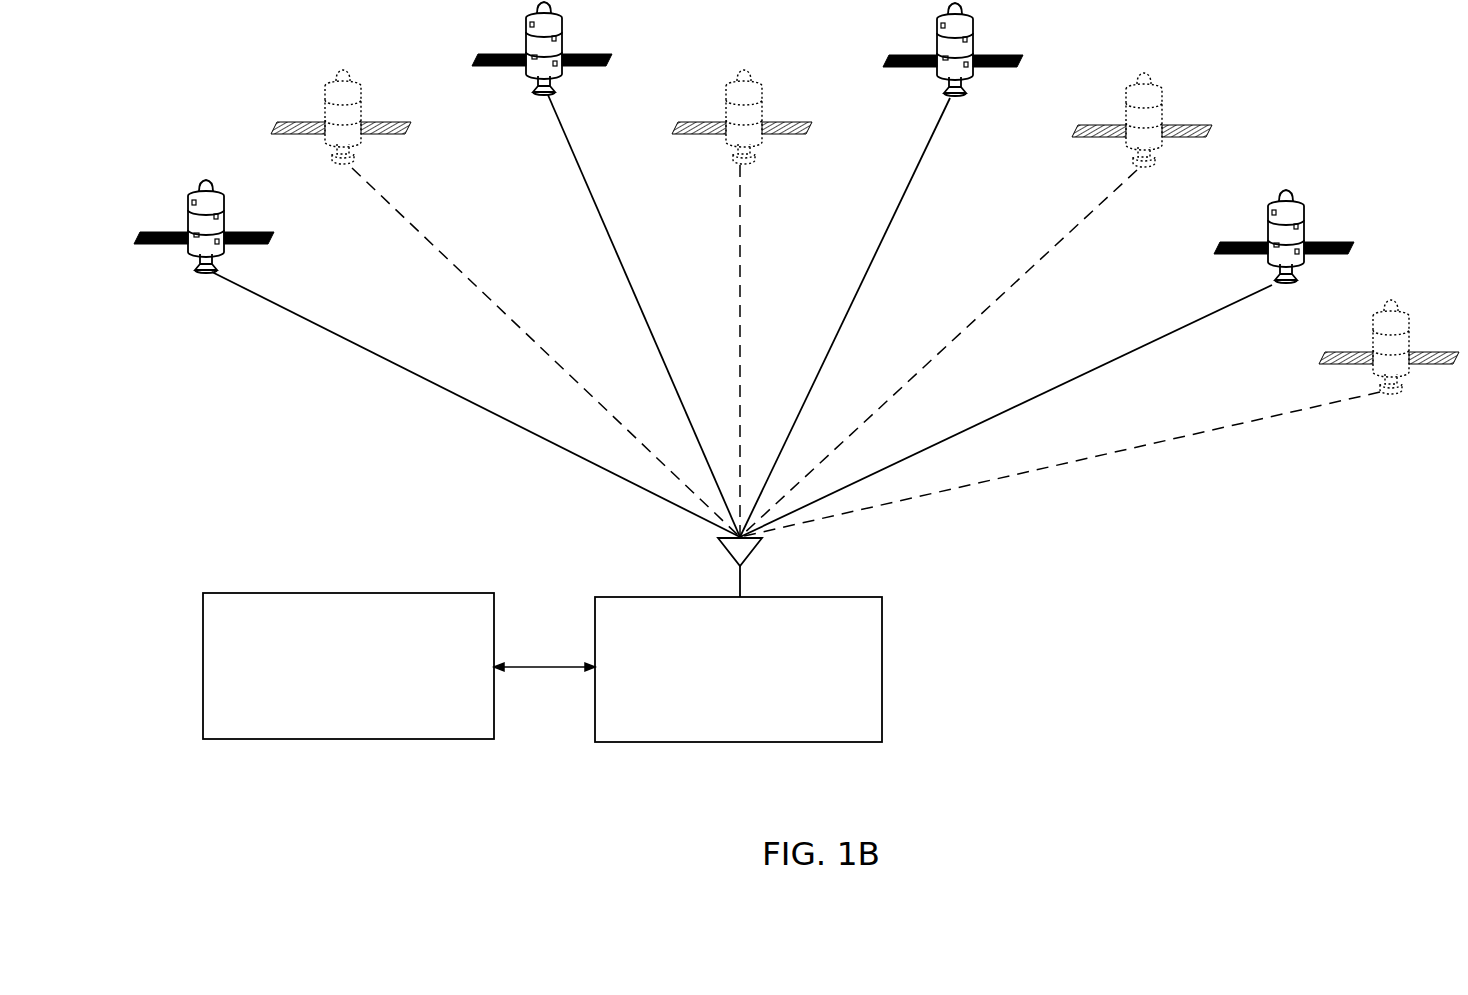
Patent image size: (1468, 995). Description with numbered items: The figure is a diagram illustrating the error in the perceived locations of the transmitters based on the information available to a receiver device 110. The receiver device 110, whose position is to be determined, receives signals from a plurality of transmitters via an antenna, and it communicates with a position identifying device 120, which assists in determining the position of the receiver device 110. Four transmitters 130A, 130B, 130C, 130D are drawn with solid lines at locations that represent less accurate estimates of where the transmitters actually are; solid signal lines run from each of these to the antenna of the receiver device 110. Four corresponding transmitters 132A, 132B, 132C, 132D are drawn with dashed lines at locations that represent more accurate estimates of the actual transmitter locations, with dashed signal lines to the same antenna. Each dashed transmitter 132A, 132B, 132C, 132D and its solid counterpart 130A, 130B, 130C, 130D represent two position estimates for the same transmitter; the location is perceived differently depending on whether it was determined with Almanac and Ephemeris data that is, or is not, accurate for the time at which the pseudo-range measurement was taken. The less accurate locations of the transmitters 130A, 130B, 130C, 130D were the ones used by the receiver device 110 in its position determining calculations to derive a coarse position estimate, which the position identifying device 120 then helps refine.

The receiver device 110 is at (827, 597).
The position identifying device 120 is at (258, 593).
The transmitter 130A is at (228, 232).
The transmitter 130B is at (582, 55).
The transmitter 130C is at (917, 58).
The transmitter 130D is at (1247, 243).
The transmitter 132A is at (390, 126).
The transmitter 132B is at (705, 123).
The transmitter 132C is at (1103, 127).
The transmitter 132D is at (1353, 352).